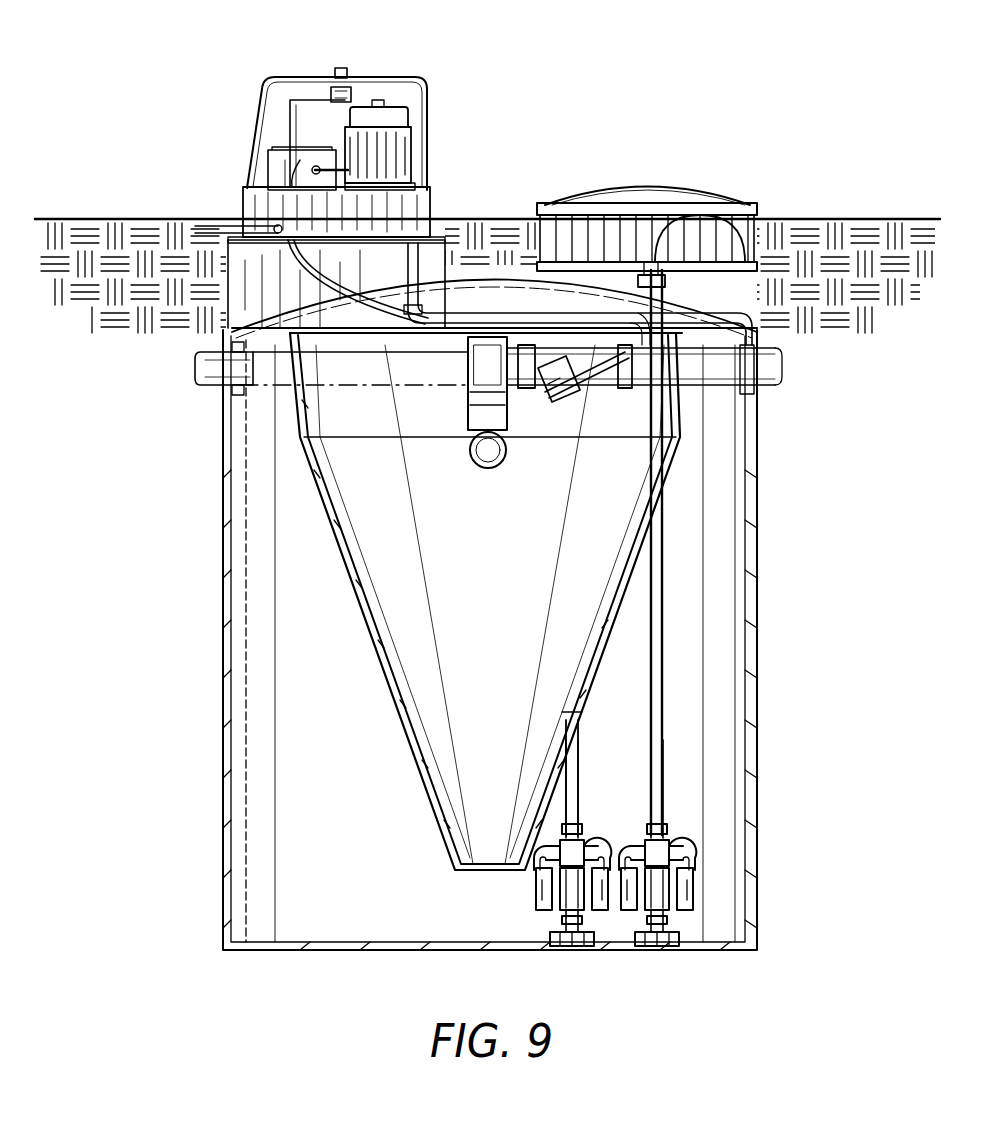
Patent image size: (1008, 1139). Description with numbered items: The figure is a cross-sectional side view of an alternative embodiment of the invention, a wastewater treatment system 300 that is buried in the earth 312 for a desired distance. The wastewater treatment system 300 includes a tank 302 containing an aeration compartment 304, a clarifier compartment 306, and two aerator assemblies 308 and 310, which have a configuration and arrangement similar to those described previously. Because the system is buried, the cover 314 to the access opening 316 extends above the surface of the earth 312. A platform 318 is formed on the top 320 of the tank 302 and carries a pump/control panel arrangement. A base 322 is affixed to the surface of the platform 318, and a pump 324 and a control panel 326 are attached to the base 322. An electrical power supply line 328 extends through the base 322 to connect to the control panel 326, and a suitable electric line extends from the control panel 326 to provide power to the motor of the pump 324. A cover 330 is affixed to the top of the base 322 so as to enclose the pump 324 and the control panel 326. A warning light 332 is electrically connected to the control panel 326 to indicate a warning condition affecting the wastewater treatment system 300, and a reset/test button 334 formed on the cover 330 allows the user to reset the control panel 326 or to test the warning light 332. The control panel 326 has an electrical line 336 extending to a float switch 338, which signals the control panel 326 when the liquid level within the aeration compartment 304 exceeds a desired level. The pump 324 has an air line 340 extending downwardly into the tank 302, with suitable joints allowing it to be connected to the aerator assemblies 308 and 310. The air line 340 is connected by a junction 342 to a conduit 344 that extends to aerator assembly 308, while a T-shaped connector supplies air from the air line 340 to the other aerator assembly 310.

The wastewater treatment system 300 is at (558, 615).
The tank 302 is at (760, 520).
The aeration compartment 304 is at (250, 685).
The clarifier compartment 306 is at (412, 601).
The aerator assembly 308 is at (580, 760).
The aerator assembly 310 is at (578, 805).
The earth 312 is at (830, 215).
The cover 314 is at (683, 204).
The access opening 316 is at (555, 195).
The platform 318 is at (430, 220).
The top 320 is at (455, 240).
The base 322 is at (250, 190).
The pump 324 is at (410, 128).
The control panel 326 is at (265, 160).
The electrical power supply line 328 is at (210, 225).
The cover 330 is at (425, 80).
The warning light 332 is at (340, 68).
The reset/test button 334 is at (355, 87).
The electrical line 336 is at (320, 280).
The float switch 338 is at (562, 385).
The air line 340 is at (430, 180).
The junction 342 is at (765, 330).
The conduit 344 is at (660, 625).